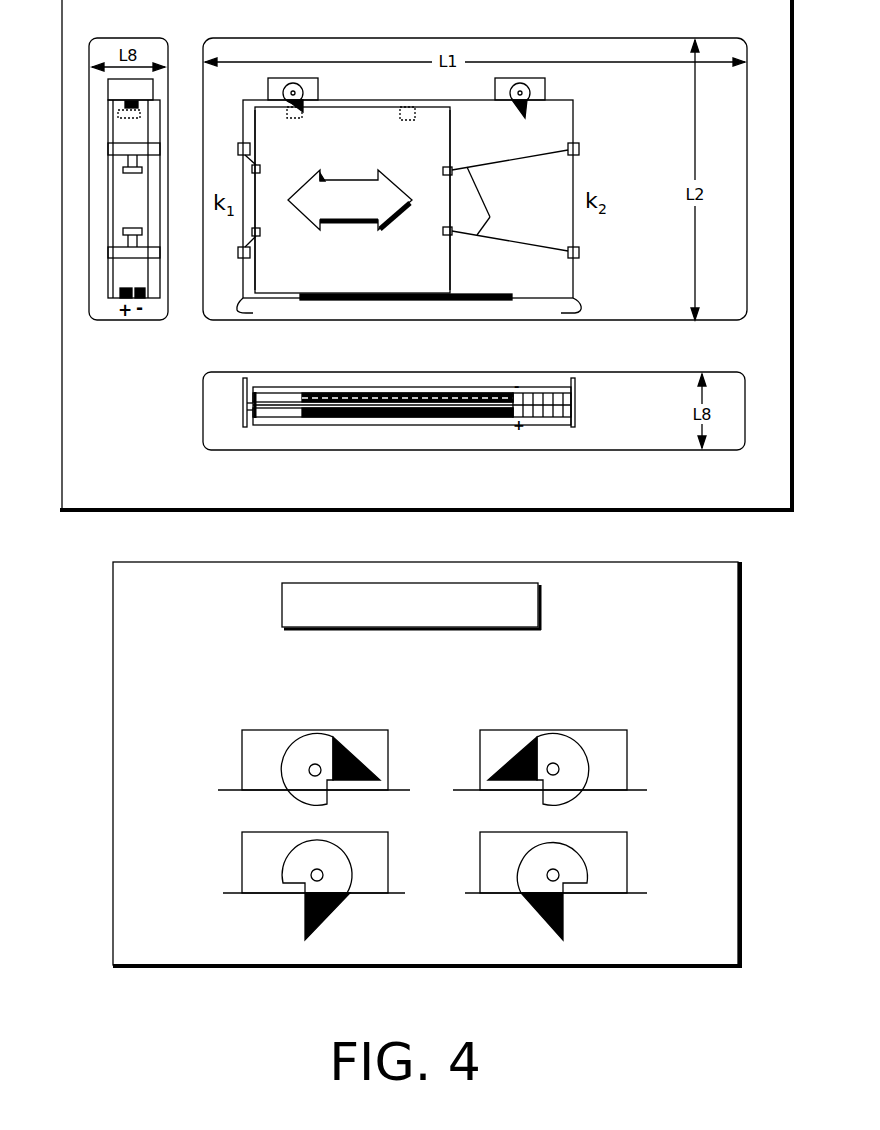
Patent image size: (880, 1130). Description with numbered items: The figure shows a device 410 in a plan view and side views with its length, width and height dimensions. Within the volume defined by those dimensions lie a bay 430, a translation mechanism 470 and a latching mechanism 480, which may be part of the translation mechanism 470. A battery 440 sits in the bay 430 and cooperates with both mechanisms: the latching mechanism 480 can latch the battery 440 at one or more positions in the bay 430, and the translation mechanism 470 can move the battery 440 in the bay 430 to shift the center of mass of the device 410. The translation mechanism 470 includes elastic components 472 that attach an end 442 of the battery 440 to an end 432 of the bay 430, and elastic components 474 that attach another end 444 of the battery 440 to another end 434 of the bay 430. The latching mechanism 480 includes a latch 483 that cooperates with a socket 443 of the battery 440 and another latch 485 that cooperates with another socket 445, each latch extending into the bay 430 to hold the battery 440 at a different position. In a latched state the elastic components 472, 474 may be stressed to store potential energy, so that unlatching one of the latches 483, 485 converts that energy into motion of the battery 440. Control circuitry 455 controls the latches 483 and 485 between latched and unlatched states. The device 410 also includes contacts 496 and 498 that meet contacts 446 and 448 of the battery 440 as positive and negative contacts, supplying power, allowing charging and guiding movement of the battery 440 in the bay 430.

The device 410 is at (612, 38).
The bay 430 is at (408, 199).
The end of the bay 432 is at (262, 310).
The another end of the bay 434 is at (554, 310).
The battery 440 is at (352, 200).
The end of the battery 442 is at (256, 265).
The another end of the battery 444 is at (450, 268).
The socket 443 is at (302, 113).
The another socket 445 is at (402, 121).
The contact of the battery 446 is at (263, 417).
The contact of the battery 448 is at (290, 407).
The control circuitry 455 is at (411, 606).
The translation mechanism 470 is at (605, 153).
The elastic components 472 is at (250, 147).
The elastic components 474 is at (490, 217).
The latching mechanism 480 is at (323, 766).
The latch 483 is at (318, 84).
The another latch 485 is at (545, 84).
The contact 496 is at (125, 300).
The contact 498 is at (142, 300).